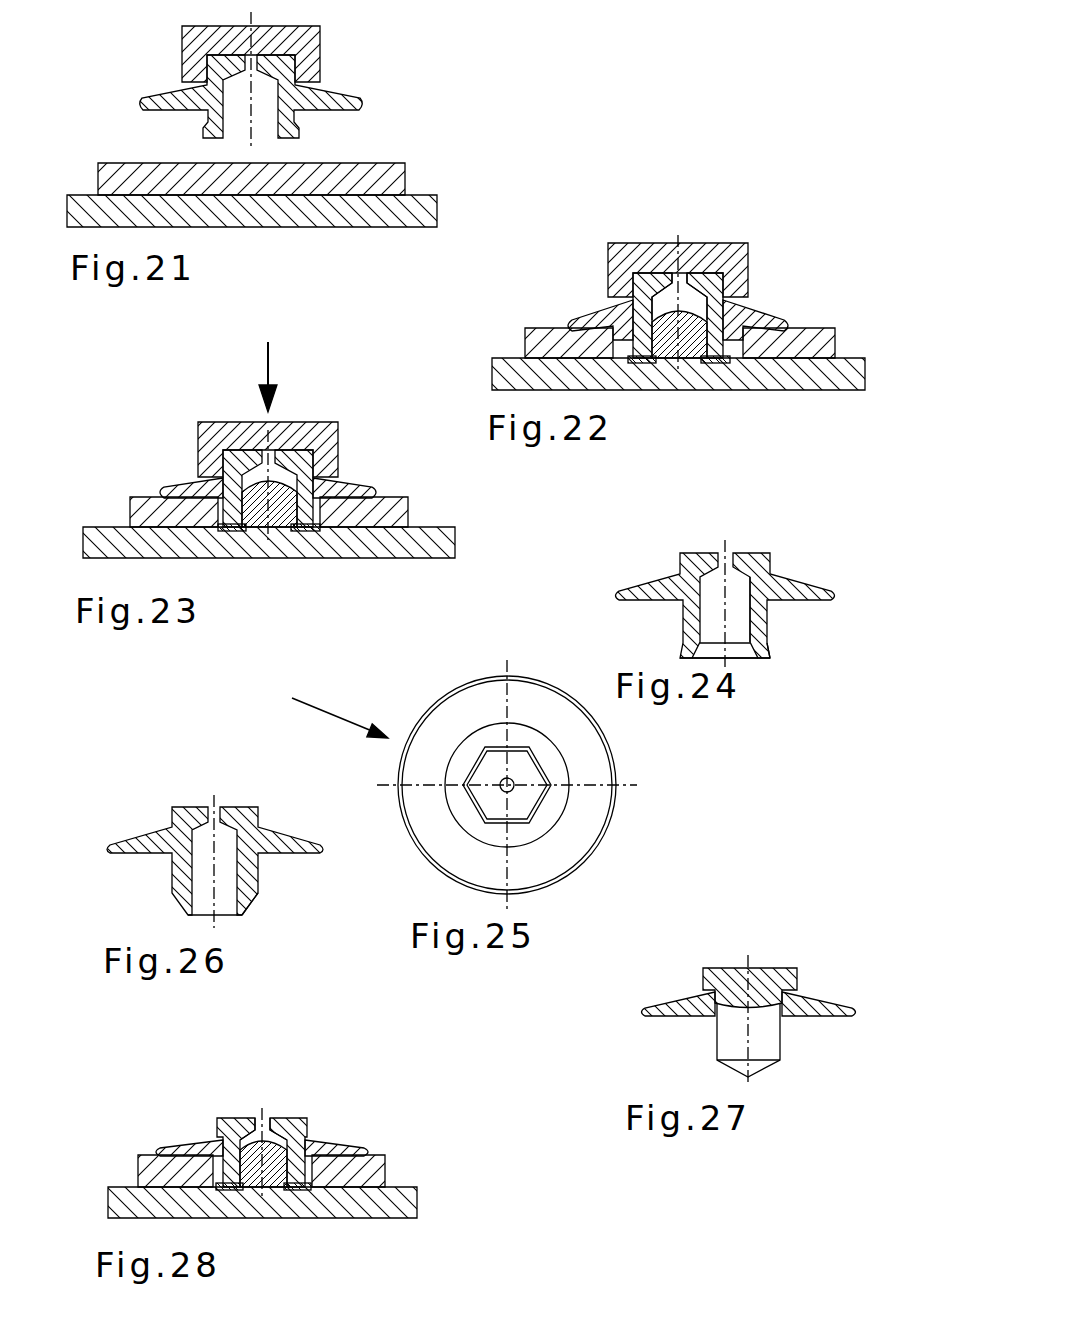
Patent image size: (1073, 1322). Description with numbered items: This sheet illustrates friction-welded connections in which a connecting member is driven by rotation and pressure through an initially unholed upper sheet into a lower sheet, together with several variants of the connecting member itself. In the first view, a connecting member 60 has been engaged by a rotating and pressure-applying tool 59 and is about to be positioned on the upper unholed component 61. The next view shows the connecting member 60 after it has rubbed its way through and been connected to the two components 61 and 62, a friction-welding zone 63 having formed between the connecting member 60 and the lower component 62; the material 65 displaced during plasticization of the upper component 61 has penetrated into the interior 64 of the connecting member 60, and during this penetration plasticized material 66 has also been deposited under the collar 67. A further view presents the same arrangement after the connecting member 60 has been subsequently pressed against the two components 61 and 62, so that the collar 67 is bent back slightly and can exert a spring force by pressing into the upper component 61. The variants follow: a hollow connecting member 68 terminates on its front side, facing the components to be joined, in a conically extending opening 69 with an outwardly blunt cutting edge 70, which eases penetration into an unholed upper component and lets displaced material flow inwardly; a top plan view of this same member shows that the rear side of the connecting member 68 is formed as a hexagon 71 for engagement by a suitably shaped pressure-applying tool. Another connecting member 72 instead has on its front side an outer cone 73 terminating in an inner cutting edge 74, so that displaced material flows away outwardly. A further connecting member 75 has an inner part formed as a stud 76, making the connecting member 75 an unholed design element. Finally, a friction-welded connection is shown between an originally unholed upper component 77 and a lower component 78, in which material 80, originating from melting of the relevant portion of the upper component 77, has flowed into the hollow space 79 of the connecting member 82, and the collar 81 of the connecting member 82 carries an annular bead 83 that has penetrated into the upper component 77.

In FIG. 21, the rotating and pressure-applying tool 59 is at (307, 40).
In FIG. 21, the connecting member 60 is at (308, 67).
In FIG. 22, the connecting member 60 is at (712, 283).
In FIG. 23, the connecting member 60 is at (323, 437).
In FIG. 21, the upper component 61 is at (373, 177).
In FIG. 22, the upper component 61 is at (542, 335).
In FIG. 23, the upper component 61 is at (388, 512).
In FIG. 21, the lower component 62 is at (385, 213).
In FIG. 22, the lower component 62 is at (837, 377).
In FIG. 23, the lower component 62 is at (417, 547).
In FIG. 22, the friction-welding zone 63 is at (638, 363).
In FIG. 23, the friction-welding zone 63 is at (300, 533).
In FIG. 22, the interior 64 is at (667, 302).
In FIG. 22, the material 65 is at (667, 343).
In FIG. 23, the material 65 is at (258, 512).
In FIG. 22, the plasticized material 66 is at (742, 313).
In FIG. 22, the collar 67 is at (598, 312).
In FIG. 23, the collar 67 is at (180, 487).
In FIG. 24, the collar 67 is at (655, 580).
In FIG. 25, the collar 67 is at (558, 853).
In FIG. 24, the hollow connecting member 68 is at (762, 612).
In FIG. 25, the hollow connecting member 68 is at (335, 721).
In FIG. 24, the conically extending opening 69 is at (752, 652).
In FIG. 24, the outwardly blunt cutting edge 70 is at (772, 657).
In FIG. 25, the hexagon 71 is at (522, 800).
In FIG. 26, the connecting member 72 is at (250, 873).
In FIG. 26, the outer cone 73 is at (248, 905).
In FIG. 26, the inner cutting edge 74 is at (188, 915).
In FIG. 27, the connecting member 75 is at (770, 977).
In FIG. 27, the stud 76 is at (765, 1043).
In FIG. 28, the upper component 77 is at (375, 1173).
In FIG. 28, the lower component 78 is at (403, 1205).
In FIG. 28, the hollow space 79 is at (263, 1137).
In FIG. 28, the material 80 is at (270, 1173).
In FIG. 28, the collar 81 is at (188, 1145).
In FIG. 28, the connecting member 82 is at (293, 1122).
In FIG. 28, the annular bead 83 is at (142, 1181).